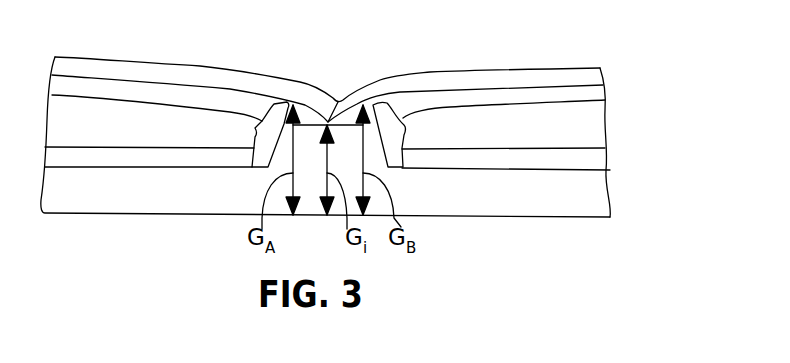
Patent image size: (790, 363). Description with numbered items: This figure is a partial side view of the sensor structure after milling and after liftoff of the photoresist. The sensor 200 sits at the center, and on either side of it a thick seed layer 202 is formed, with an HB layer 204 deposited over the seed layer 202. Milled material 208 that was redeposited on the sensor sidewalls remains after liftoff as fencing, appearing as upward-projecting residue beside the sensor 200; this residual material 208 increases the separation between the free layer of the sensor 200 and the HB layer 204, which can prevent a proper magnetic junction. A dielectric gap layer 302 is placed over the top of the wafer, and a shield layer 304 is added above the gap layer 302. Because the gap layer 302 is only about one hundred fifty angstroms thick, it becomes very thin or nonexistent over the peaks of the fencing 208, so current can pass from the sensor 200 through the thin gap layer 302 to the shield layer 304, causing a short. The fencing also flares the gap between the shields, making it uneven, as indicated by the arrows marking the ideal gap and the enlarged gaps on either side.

The sensor 200 is at (338, 102).
The seed layer 202 is at (609, 158).
The HB layer 204 is at (606, 132).
The redeposited milled material (fencing) 208 is at (264, 107).
The dielectric gap layer 302 is at (605, 88).
The shield layer 304 is at (601, 74).